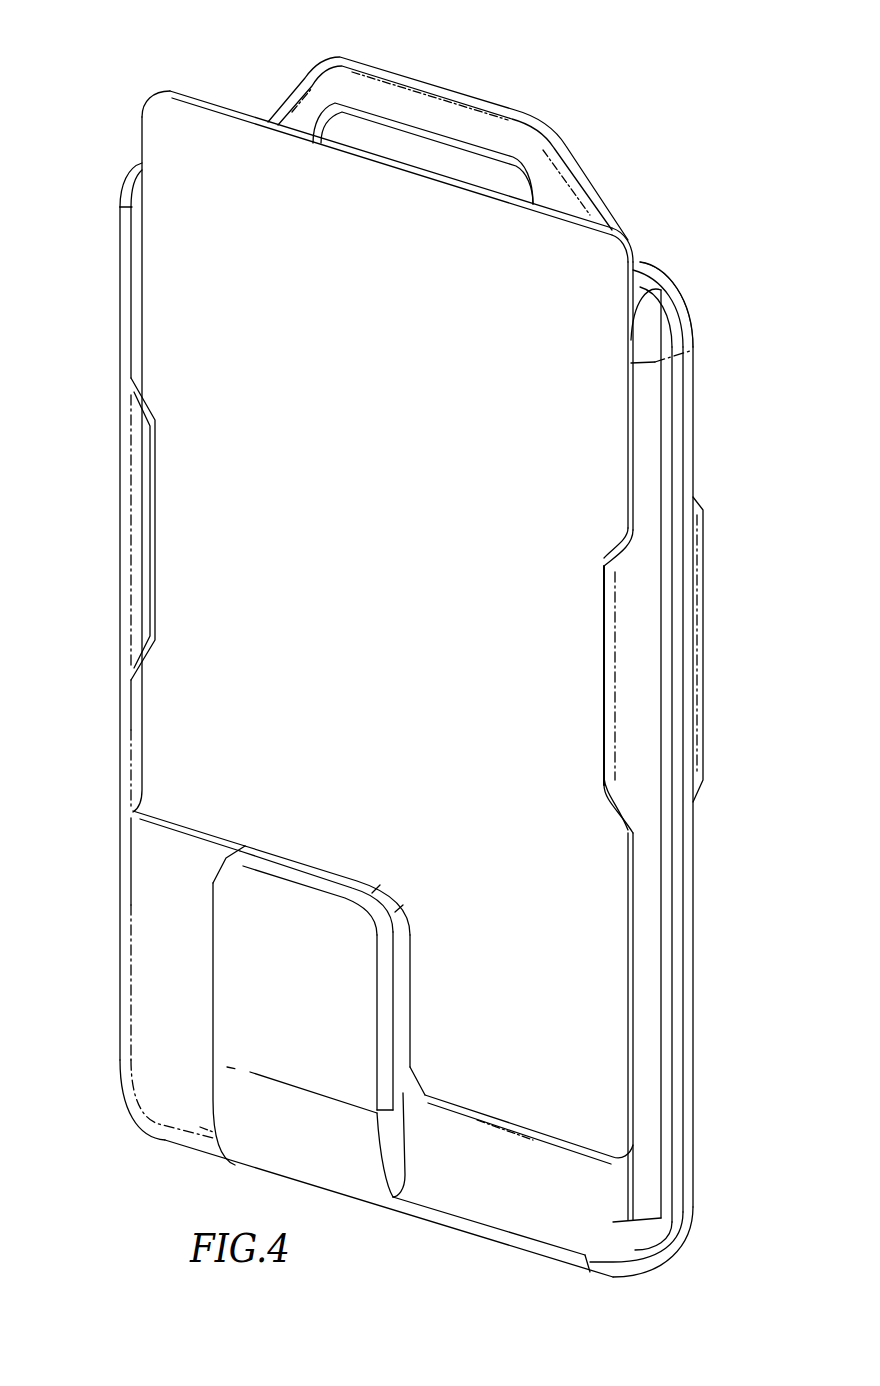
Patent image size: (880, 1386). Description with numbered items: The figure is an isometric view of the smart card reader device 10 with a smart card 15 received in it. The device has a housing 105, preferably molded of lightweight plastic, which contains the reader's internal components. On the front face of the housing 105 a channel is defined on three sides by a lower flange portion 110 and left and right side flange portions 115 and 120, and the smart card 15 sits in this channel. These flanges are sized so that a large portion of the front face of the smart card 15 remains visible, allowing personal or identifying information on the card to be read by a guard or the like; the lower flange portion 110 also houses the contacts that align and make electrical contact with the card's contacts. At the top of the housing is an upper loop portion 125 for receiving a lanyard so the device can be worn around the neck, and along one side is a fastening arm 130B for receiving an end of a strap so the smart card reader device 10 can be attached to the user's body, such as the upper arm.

The smart card reader device 10 is at (670, 262).
The smart card 15 is at (388, 410).
The housing 105 is at (694, 394).
The lower flange portion 110 is at (153, 890).
The left side flange portion 115 is at (133, 523).
The right side flange portion 120 is at (650, 617).
The loop 125 is at (489, 133).
The fastening arm 130B is at (696, 684).